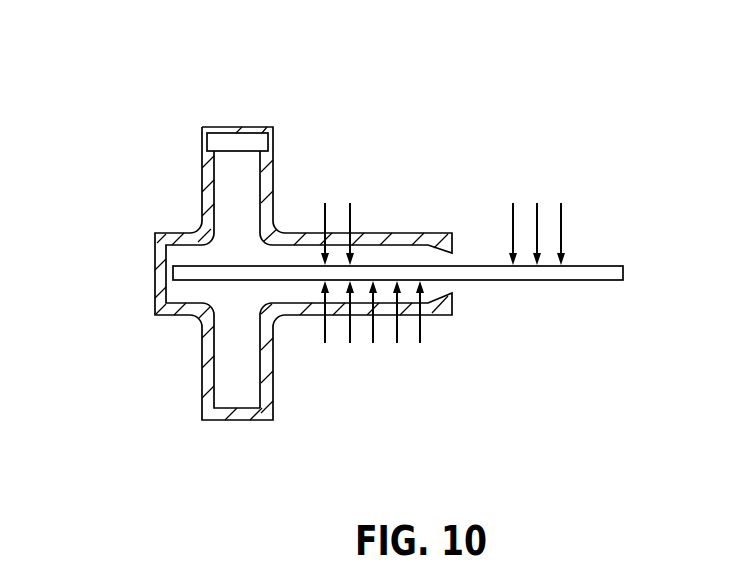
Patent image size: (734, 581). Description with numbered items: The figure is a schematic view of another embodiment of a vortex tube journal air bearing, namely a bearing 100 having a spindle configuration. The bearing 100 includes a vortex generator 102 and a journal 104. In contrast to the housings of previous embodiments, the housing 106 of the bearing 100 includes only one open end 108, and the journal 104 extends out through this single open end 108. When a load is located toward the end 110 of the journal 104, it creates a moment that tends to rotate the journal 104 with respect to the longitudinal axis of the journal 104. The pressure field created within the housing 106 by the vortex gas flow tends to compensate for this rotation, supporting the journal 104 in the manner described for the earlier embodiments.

The bearing 100 is at (139, 95).
The vortex generator 102 is at (270, 168).
The journal 104 is at (490, 280).
The housing 106 is at (374, 230).
The open end 108 is at (452, 262).
The end of the journal 110 is at (605, 265).